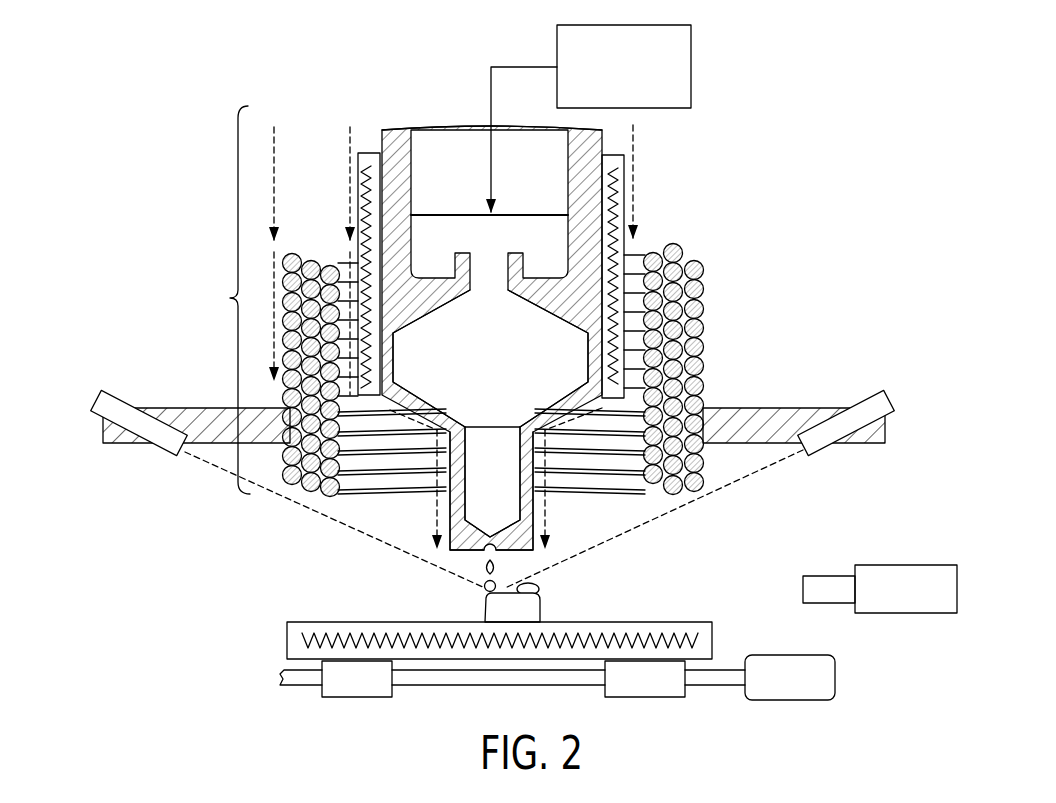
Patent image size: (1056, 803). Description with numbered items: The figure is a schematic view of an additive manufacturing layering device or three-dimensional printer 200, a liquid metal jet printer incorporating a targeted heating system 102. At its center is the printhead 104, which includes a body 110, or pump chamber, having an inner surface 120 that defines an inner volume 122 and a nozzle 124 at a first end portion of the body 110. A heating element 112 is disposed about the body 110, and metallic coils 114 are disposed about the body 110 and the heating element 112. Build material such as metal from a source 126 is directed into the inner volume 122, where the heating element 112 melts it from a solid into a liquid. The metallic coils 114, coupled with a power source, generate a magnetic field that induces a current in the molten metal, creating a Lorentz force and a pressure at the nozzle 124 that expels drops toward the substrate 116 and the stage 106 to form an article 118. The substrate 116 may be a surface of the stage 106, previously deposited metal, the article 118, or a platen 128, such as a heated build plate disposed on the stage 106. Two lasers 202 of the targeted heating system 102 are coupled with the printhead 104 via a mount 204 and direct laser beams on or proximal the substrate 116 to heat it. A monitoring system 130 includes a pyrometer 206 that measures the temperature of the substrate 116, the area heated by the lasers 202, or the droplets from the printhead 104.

The 3D printer 200 is at (184, 103).
The targeted heating system 102 is at (872, 389).
The printhead 104 is at (219, 300).
The stage 106 is at (268, 681).
The body 110 is at (394, 120).
The heating element 112 is at (370, 151).
The metallic coil 114 is at (674, 240).
The substrate 116 is at (282, 611).
The article 118 is at (547, 609).
The inner surface 120 is at (566, 172).
The inner volume 122 is at (508, 364).
The nozzle 124 is at (541, 523).
The source 126 is at (640, 78).
The platen 128 is at (287, 641).
The monitoring system 130 is at (954, 559).
The laser 202 is at (112, 398).
The mount 204 is at (750, 406).
The pyrometer 206 is at (925, 598).